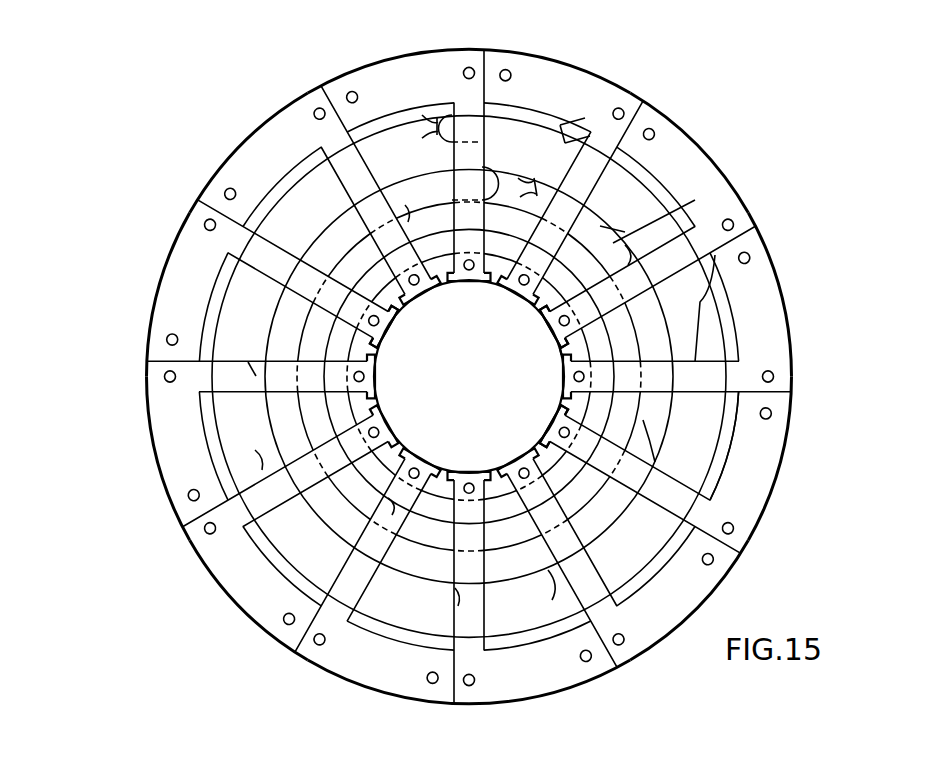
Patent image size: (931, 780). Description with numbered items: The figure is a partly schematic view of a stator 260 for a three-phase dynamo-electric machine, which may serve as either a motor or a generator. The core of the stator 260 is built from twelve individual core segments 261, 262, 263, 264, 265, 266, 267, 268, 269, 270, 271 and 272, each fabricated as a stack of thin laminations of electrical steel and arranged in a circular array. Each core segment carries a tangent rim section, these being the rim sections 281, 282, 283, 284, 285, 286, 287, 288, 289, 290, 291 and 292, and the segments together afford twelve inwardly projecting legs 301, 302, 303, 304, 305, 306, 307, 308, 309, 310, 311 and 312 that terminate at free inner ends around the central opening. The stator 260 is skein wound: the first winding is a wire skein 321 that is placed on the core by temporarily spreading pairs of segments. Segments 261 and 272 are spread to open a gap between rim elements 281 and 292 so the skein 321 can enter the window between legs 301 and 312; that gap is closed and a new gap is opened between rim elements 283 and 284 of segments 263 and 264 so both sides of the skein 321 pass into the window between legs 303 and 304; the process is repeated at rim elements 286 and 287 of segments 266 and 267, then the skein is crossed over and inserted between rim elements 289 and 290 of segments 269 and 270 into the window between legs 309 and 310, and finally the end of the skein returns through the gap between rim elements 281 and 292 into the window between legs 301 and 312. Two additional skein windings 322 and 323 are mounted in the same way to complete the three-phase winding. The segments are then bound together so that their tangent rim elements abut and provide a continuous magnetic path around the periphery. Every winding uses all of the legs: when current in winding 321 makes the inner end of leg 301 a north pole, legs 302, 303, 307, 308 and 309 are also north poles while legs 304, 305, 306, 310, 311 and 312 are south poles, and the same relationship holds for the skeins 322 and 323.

The stator 260 is at (758, 164).
The core segment 261 is at (748, 237).
The core segment 262 is at (785, 376).
The core segment 263 is at (736, 536).
The core segment 264 is at (622, 650).
The core segment 265 is at (470, 705).
The core segment 266 is at (290, 650).
The core segment 267 is at (200, 543).
The core segment 268 is at (152, 408).
The core segment 269 is at (185, 220).
The core segment 270 is at (300, 103).
The core segment 271 is at (456, 48).
The core segment 272 is at (633, 108).
The rim section 281 is at (700, 162).
The rim section 282 is at (773, 292).
The rim section 283 is at (770, 438).
The rim section 284 is at (708, 580).
The rim section 285 is at (556, 693).
The rim section 286 is at (378, 690).
The rim section 287 is at (202, 628).
The rim section 288 is at (168, 485).
The rim section 289 is at (152, 298).
The rim section 290 is at (245, 157).
The rim section 291 is at (405, 55).
The rim section 292 is at (545, 58).
The core leg 301 is at (548, 322).
The core leg 302 is at (725, 467).
The core leg 303 is at (552, 416).
The core leg 304 is at (556, 575).
The core leg 305 is at (460, 593).
The core leg 306 is at (395, 505).
The core leg 307 is at (262, 458).
The core leg 308 is at (252, 368).
The core leg 309 is at (388, 327).
The core leg 310 is at (410, 213).
The core leg 311 is at (475, 128).
The core leg 312 is at (620, 230).
The wire skein 321 is at (557, 352).
The skein winding 322 is at (630, 252).
The skein winding 323 is at (565, 140).